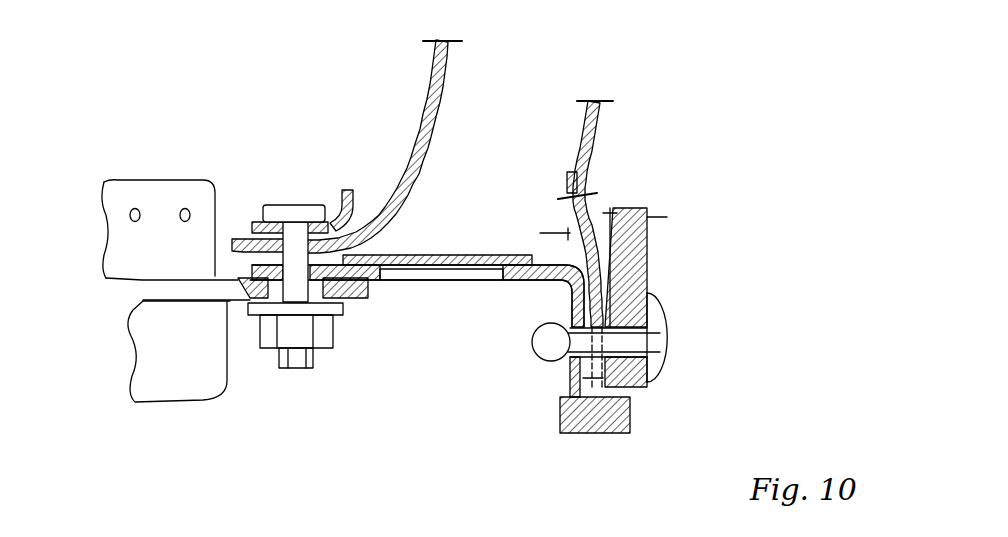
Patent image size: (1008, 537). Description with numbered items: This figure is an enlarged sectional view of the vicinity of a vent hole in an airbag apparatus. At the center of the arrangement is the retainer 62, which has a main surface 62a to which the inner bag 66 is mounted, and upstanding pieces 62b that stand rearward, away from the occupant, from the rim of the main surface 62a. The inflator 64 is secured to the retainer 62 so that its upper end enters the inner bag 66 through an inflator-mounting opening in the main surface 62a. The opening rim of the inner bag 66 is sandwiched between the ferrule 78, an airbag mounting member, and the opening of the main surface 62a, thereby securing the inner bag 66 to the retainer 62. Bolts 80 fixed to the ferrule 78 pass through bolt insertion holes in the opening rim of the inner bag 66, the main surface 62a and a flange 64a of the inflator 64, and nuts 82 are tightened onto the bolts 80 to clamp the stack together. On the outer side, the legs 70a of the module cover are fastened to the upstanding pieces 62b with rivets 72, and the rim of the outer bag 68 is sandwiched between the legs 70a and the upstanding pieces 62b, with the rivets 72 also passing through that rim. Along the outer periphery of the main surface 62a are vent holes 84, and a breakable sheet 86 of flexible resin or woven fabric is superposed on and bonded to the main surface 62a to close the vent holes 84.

The retainer 62 is at (567, 262).
The main surface 62a is at (383, 283).
The upstanding pieces 62b is at (550, 382).
The inflator 64 is at (150, 180).
The flange 64a is at (150, 305).
The inner bag 66 is at (432, 82).
The outer bag 68 is at (580, 130).
The legs 70a is at (640, 237).
The rivets 72 is at (667, 343).
The ferrule 78 is at (347, 188).
The bolts 80 is at (293, 370).
The nuts 82 is at (260, 348).
The vent holes 84 is at (448, 284).
The breakable sheet 86 is at (448, 255).